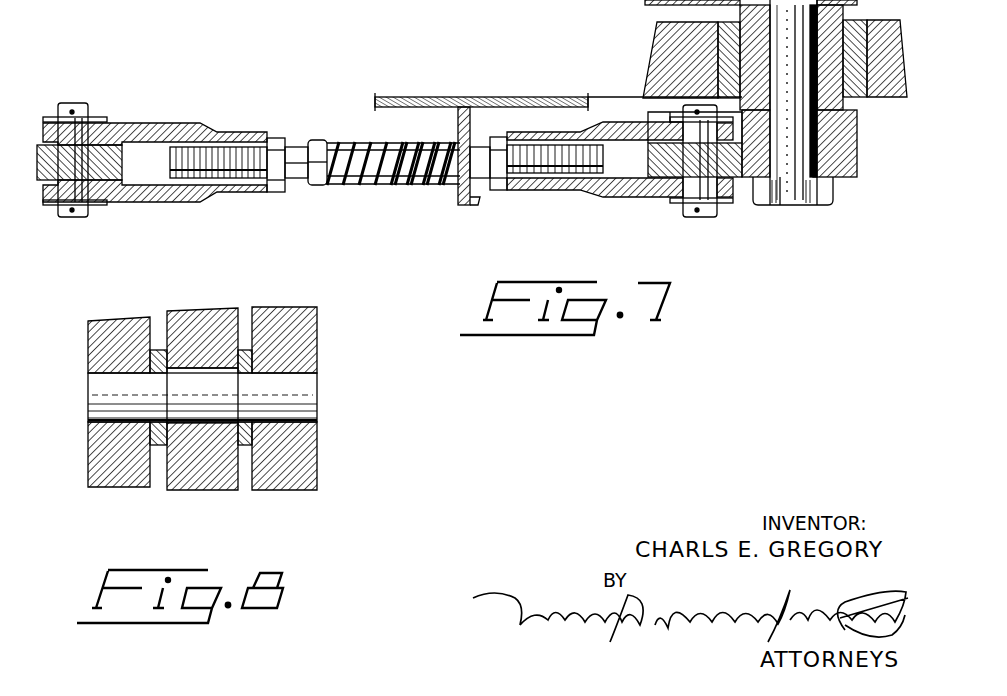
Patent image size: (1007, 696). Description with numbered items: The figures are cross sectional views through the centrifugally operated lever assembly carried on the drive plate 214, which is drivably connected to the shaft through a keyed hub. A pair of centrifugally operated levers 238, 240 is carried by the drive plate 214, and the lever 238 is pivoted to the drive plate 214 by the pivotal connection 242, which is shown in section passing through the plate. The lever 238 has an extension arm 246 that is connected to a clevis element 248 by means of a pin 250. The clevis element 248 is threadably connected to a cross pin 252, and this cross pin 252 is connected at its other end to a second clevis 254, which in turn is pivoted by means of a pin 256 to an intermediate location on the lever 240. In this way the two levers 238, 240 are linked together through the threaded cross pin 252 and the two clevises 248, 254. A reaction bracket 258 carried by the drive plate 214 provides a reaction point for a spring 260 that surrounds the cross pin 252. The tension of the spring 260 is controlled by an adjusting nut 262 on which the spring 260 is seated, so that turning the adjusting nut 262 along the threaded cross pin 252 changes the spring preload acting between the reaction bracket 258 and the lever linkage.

In FIG. 7, the centrifugally operated lever 240 is at (837, 157).
In FIG. 7, the extension arm 246 is at (118, 180).
In FIG. 7, the clevis element 248 is at (146, 195).
In FIG. 7, the pin 250 is at (93, 110).
In FIG. 7, the cross pin 252 is at (357, 183).
In FIG. 7, the clevis 254 is at (610, 197).
In FIG. 7, the pin 256 is at (707, 218).
In FIG. 7, the reaction bracket 258 is at (465, 204).
In FIG. 7, the spring 260 is at (412, 184).
In FIG. 7, the adjusting nut 262 is at (323, 142).
In FIG. 8, the drive plate 214 is at (205, 470).
In FIG. 8, the centrifugally operated lever 238 is at (117, 470).
In FIG. 8, the pivotal connection 242 is at (300, 403).